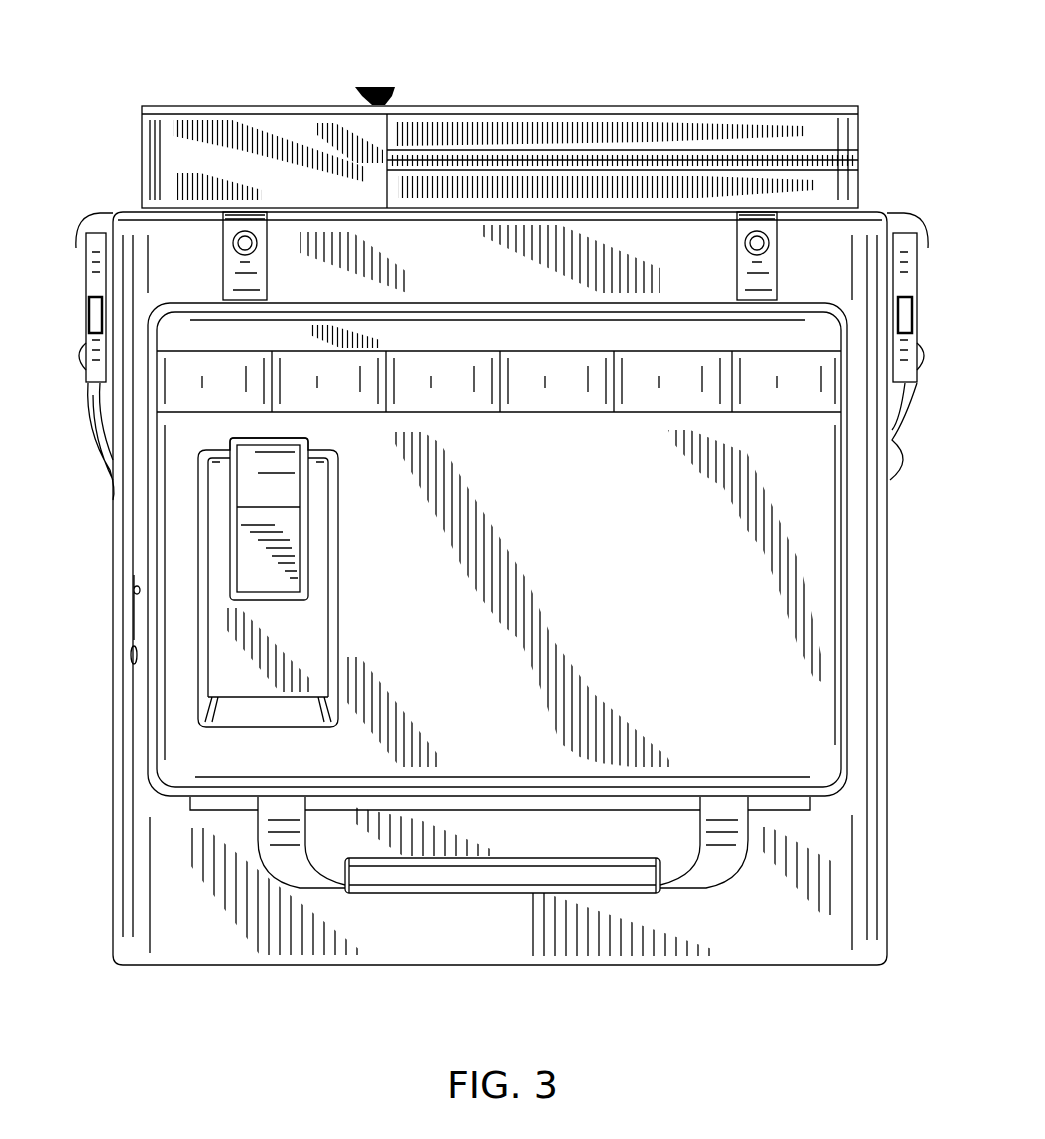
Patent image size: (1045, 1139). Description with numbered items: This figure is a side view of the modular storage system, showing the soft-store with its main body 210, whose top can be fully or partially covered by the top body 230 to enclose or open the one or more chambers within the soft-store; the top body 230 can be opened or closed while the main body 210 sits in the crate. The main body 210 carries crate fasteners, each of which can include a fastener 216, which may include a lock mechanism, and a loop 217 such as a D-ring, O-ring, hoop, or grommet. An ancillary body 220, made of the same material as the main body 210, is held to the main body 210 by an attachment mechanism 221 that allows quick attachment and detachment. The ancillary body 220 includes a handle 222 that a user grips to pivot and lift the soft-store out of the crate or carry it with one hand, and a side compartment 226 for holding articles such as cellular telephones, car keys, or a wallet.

The main body 210 is at (158, 245).
The fastener 216 is at (103, 316).
The loop 217 is at (95, 455).
The ancillary body 220 is at (797, 614).
The attachment mechanism 221 is at (752, 282).
The handle 222 is at (292, 860).
The side compartment 226 is at (237, 640).
The top body 230 is at (222, 108).